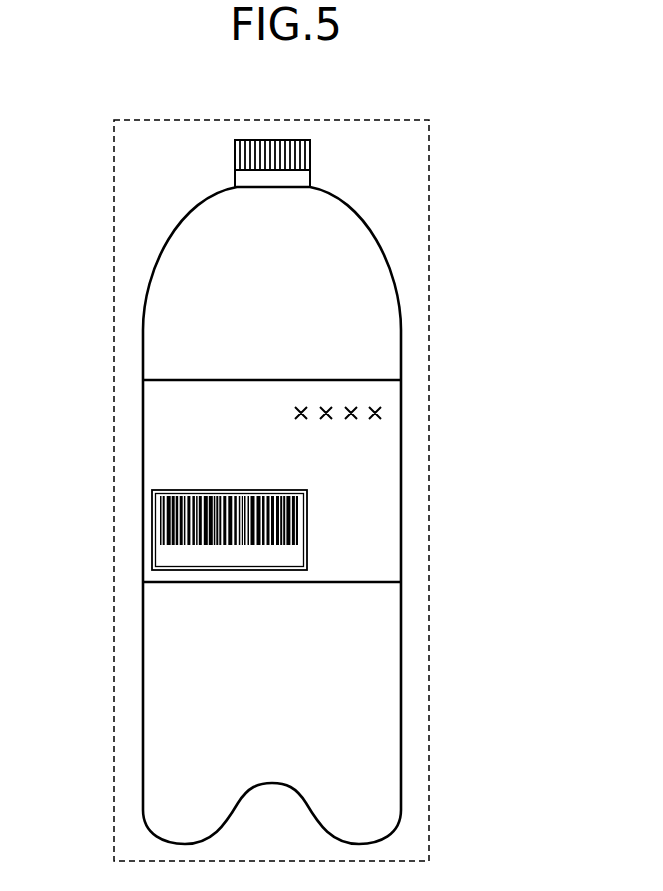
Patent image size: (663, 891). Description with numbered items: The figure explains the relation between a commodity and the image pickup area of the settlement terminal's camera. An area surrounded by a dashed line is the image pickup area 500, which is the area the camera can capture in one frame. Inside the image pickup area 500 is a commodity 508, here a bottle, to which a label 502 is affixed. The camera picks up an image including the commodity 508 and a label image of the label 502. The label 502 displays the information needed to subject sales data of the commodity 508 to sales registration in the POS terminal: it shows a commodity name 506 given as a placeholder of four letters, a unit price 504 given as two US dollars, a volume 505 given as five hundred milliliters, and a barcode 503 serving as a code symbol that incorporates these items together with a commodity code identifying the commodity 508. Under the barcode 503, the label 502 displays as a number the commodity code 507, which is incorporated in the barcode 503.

The image pickup area 500 is at (407, 120).
The commodity 508 is at (383, 252).
The label 502 is at (370, 380).
The commodity name 506 is at (392, 410).
The unit price 504 is at (392, 472).
The volume 505 is at (392, 554).
The barcode 503 is at (155, 520).
The commodity code 507 is at (157, 572).